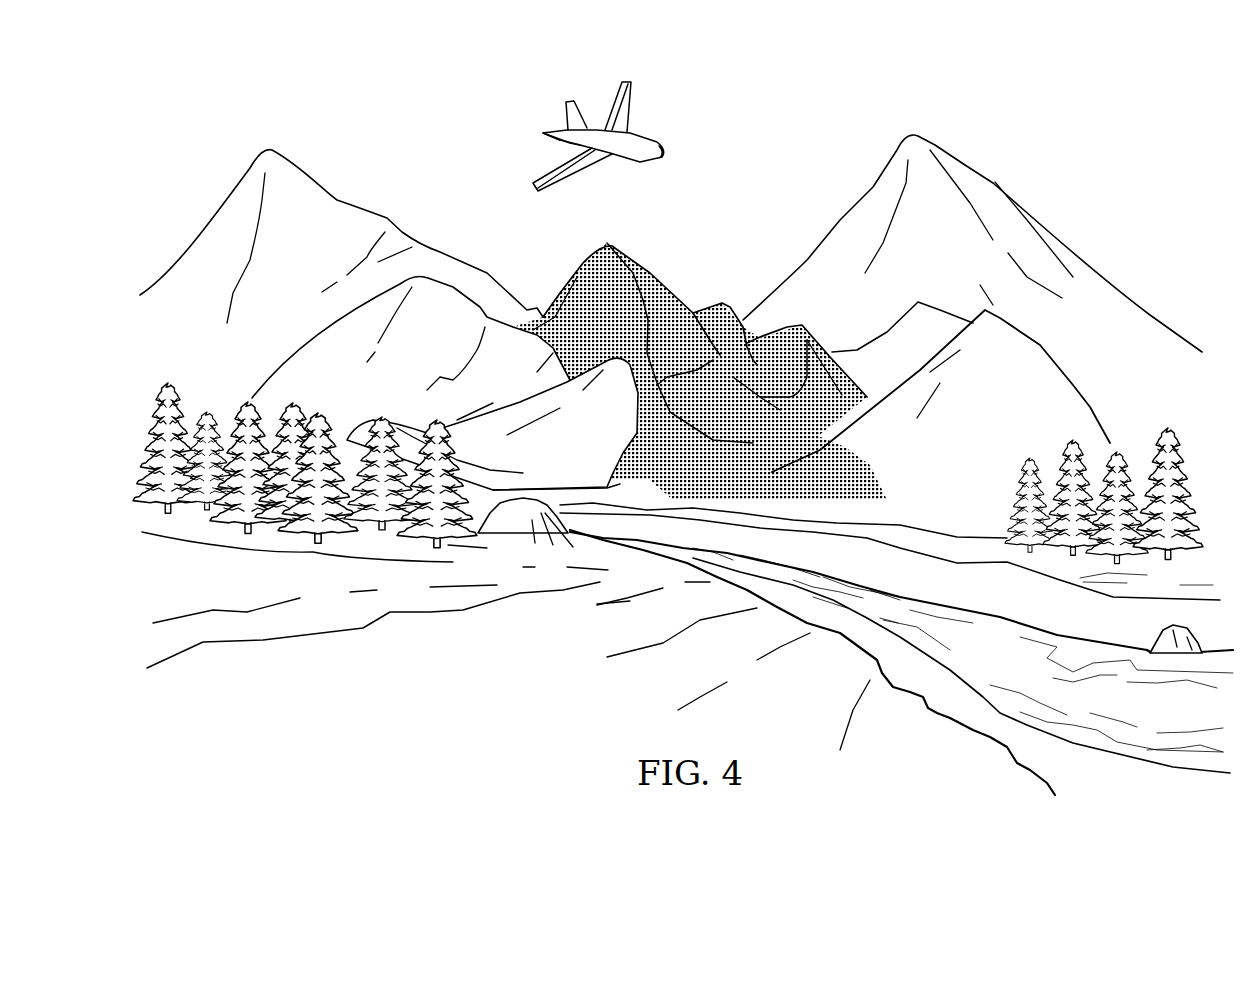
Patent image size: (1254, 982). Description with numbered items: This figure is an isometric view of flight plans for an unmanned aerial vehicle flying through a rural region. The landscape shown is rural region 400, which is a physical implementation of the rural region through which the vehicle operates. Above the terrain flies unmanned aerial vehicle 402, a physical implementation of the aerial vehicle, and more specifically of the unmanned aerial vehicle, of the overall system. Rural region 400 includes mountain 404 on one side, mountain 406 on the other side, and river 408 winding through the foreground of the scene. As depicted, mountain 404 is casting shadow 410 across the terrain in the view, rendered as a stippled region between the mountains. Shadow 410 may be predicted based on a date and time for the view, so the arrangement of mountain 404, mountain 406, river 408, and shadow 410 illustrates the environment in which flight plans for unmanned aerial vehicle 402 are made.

The rural region 400 is at (377, 67).
The unmanned aerial vehicle 402 is at (572, 102).
The mountain 404 is at (248, 170).
The mountain 406 is at (970, 172).
The river 408 is at (1003, 630).
The shadow 410 is at (847, 465).